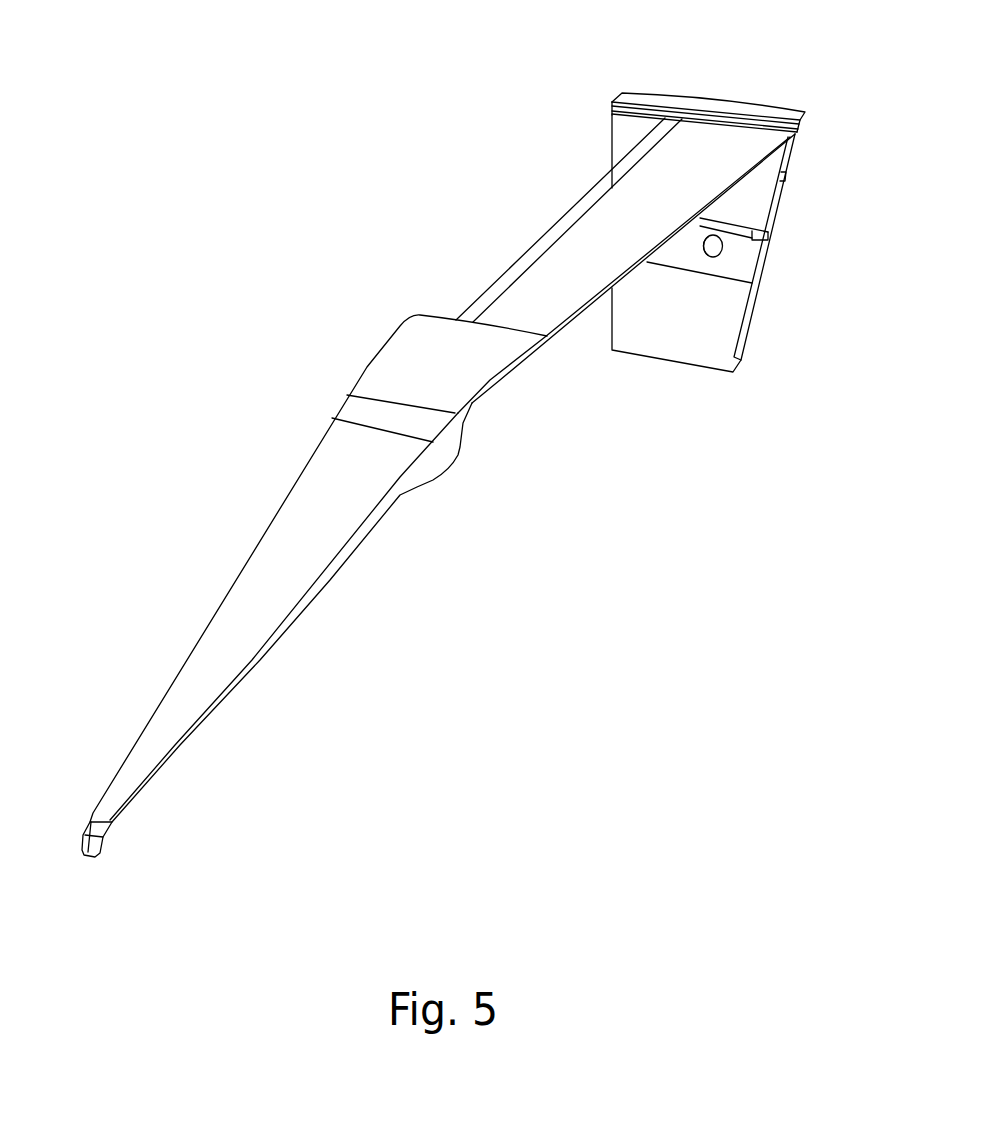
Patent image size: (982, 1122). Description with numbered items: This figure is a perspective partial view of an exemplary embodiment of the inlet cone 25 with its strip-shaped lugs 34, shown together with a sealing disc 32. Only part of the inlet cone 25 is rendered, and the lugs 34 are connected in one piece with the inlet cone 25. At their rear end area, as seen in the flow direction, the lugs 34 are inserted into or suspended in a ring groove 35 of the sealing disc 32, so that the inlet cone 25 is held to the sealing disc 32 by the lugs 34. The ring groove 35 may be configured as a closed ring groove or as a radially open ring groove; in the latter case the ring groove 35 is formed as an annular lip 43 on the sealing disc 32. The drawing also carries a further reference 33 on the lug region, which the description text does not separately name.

The inlet cone 25 is at (337, 523).
The sealing disc 32 is at (712, 343).
The upper strut 33 is at (515, 267).
The strip-shaped lug 34 is at (558, 283).
The ring groove 35 is at (623, 118).
The annular lip 43 is at (656, 102).